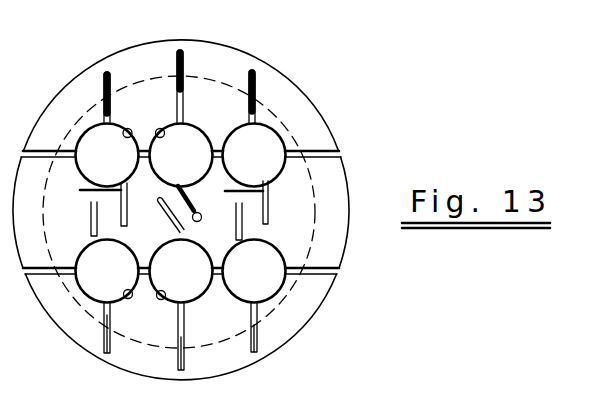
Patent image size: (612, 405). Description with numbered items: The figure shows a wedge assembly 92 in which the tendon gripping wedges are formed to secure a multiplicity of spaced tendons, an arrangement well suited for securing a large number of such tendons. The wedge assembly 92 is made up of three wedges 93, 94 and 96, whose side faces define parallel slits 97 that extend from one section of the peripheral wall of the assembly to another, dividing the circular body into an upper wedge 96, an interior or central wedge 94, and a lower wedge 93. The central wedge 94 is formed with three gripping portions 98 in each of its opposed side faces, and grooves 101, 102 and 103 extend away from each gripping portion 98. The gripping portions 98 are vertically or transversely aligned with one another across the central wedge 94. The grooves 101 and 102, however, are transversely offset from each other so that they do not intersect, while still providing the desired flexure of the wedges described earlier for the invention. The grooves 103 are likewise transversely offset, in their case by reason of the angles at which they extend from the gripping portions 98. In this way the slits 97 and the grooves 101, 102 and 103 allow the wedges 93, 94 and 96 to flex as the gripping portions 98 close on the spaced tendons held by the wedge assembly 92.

The wedge assembly 92 is at (354, 196).
The wedge 93 is at (293, 332).
The interior or central wedge 94 is at (306, 238).
The wedge 96 is at (297, 143).
The parallel slits 97 is at (56, 268).
The gripping portions 98 is at (157, 129).
The groove 101 is at (236, 217).
The groove 102 is at (90, 216).
The grooves 103 is at (182, 232).